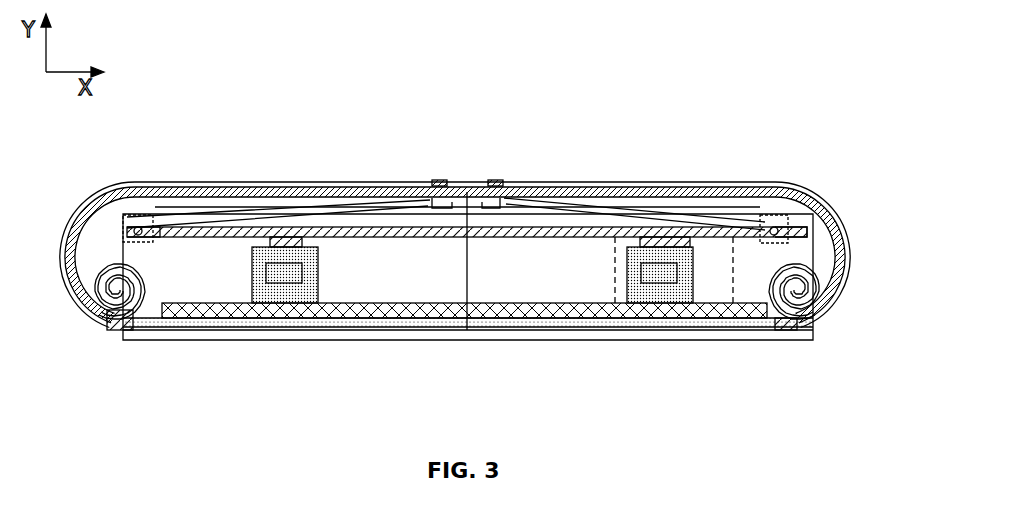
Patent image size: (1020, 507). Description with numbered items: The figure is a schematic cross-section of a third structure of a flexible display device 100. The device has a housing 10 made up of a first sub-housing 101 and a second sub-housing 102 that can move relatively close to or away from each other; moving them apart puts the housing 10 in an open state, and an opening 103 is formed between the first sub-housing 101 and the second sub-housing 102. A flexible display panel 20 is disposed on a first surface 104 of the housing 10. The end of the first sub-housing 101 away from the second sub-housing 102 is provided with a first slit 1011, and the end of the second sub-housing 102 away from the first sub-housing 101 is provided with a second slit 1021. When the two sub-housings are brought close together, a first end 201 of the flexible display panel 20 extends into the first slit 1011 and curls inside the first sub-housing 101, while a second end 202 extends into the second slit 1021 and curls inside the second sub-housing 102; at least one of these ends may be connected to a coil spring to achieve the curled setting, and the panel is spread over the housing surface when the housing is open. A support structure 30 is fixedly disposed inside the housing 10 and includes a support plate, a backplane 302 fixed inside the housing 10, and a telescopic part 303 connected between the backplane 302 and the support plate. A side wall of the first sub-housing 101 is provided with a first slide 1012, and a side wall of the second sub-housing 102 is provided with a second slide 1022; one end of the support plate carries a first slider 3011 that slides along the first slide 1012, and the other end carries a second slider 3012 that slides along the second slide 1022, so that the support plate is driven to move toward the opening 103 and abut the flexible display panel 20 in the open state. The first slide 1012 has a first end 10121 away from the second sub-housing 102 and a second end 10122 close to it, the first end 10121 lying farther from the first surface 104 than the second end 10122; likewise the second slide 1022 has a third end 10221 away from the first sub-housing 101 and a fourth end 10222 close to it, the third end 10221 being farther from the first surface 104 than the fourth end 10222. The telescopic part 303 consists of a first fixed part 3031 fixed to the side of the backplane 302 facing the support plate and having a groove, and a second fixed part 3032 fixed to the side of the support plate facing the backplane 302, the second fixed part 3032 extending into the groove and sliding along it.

The flexible display device 100 is at (633, 128).
The housing 10 is at (468, 315).
The first sub-housing 101 is at (432, 265).
The second sub-housing 102 is at (498, 265).
The first slit 1011 is at (111, 333).
The first slide 1012 is at (312, 210).
The first end 10121 is at (152, 224).
The second end 10122 is at (425, 194).
The second slit 1021 is at (789, 331).
The second slide 1022 is at (615, 209).
The third end 10221 is at (763, 216).
The fourth end 10222 is at (491, 182).
The opening 103 is at (463, 192).
The first surface 104 is at (558, 186).
The flexible display panel 20 is at (215, 183).
The first end 201 is at (115, 278).
The second end 202 is at (803, 280).
The support structure 30 is at (798, 210).
The first slider 3011 is at (157, 228).
The second slider 3012 is at (790, 228).
The backplane 302 is at (550, 318).
The telescopic part 303 is at (704, 288).
The first fixed part 3031 is at (271, 240).
The second fixed part 3032 is at (258, 240).